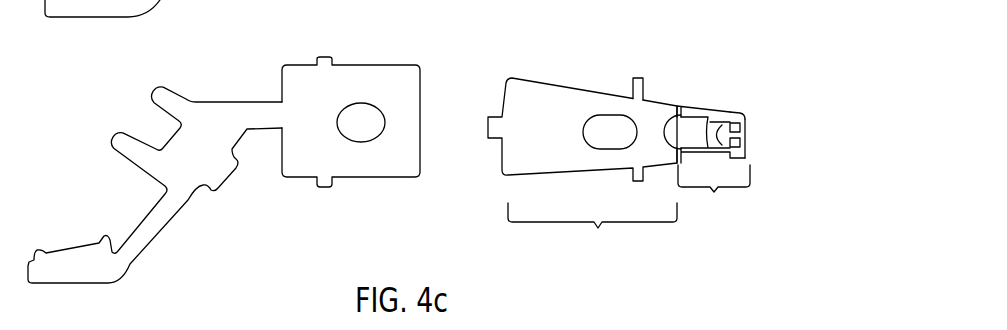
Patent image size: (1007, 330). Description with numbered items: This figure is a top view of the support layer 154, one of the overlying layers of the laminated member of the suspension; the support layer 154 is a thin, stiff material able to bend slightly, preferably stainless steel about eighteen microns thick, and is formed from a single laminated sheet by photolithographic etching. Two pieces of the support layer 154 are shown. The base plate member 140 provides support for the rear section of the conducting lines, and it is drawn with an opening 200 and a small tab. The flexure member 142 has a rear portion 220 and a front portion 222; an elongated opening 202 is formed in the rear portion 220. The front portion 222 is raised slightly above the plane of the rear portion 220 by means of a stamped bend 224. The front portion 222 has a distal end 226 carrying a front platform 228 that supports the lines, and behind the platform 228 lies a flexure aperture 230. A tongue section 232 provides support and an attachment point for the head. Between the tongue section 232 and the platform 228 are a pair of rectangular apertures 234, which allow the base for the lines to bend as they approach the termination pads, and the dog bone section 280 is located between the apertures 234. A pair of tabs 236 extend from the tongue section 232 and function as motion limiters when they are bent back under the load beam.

The base plate member 140 is at (382, 157).
The support layer 154 is at (352, 65).
The aperture 200 is at (370, 105).
The rear portion 220 is at (592, 136).
The flexure member 142 is at (651, 100).
The slot 202 is at (593, 113).
The front portion 222 is at (758, 119).
The stamped bend 224 is at (677, 110).
The flexure aperture 230 is at (687, 122).
The tabs 236 is at (722, 118).
The tongue section 232 is at (742, 115).
The rectangular apertures 234 is at (747, 143).
The distal end 226 is at (747, 125).
The dog bone section 280 is at (735, 133).
The front platform 228 is at (747, 140).